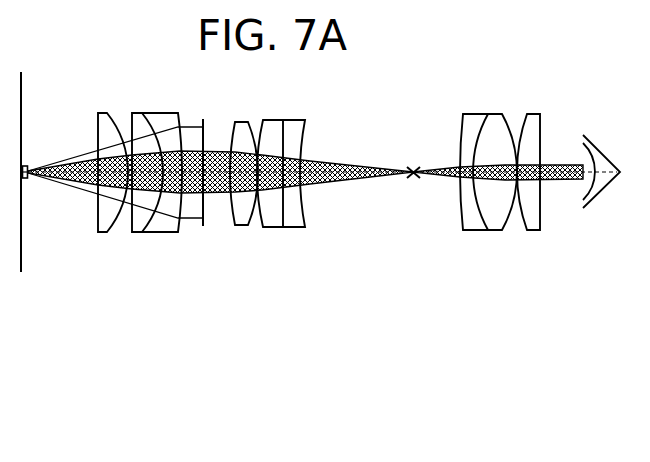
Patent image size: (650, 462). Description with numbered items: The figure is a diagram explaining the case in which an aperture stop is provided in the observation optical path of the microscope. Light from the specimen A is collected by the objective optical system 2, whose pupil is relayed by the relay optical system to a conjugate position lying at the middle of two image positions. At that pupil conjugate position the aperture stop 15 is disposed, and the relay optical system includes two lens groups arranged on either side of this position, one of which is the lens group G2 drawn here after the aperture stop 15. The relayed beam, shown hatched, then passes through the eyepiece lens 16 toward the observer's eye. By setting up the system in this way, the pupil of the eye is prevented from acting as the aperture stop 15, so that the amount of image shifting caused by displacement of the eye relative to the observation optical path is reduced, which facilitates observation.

The specimen A is at (24, 165).
The objective optical system 2 is at (132, 248).
The aperture stop 15 is at (203, 119).
The lens group G2 is at (262, 248).
The eyepiece lens 16 is at (497, 248).